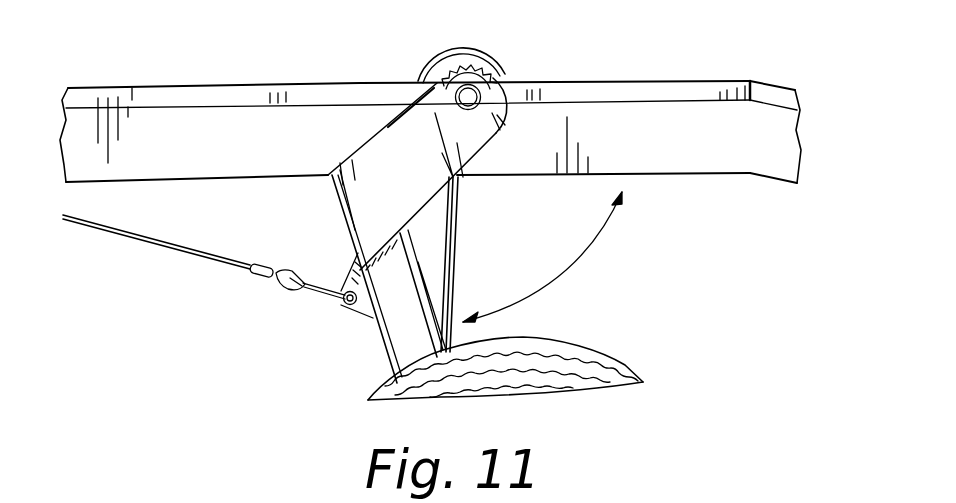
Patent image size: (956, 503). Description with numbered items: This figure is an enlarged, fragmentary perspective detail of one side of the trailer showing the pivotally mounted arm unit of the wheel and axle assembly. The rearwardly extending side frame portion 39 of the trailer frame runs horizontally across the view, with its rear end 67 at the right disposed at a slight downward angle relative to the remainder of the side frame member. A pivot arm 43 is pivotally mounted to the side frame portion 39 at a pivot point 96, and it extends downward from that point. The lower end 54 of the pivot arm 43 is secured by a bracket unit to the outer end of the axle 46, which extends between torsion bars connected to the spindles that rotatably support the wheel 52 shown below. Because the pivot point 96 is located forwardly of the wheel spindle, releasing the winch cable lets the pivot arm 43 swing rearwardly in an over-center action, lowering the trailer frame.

The side frame portion 39 is at (227, 112).
The pivot arm 43 is at (403, 134).
The axle 46 is at (455, 231).
The wheel 52 is at (598, 360).
The lower end of pivot arm 54 is at (407, 340).
The rear end of frame side portion 67 is at (775, 94).
The pivot point 96 is at (480, 88).